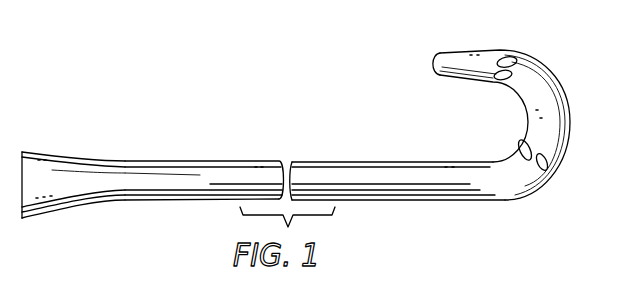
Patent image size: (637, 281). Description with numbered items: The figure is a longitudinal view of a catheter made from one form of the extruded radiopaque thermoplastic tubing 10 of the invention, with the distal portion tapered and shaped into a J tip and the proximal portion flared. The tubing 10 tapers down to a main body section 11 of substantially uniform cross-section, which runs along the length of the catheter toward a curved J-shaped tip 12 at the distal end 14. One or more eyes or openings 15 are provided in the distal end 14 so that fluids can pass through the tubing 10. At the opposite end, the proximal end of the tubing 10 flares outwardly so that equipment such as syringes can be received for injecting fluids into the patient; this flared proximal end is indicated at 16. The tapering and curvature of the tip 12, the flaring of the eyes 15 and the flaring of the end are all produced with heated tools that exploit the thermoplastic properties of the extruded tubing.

The tubing 10 is at (319, 124).
The main body section 11 is at (250, 138).
The curved J-shaped tip 12 is at (495, 50).
The distal end 14 is at (569, 112).
The eyes or openings 15 is at (512, 74).
The flared proximal end 16 is at (96, 162).